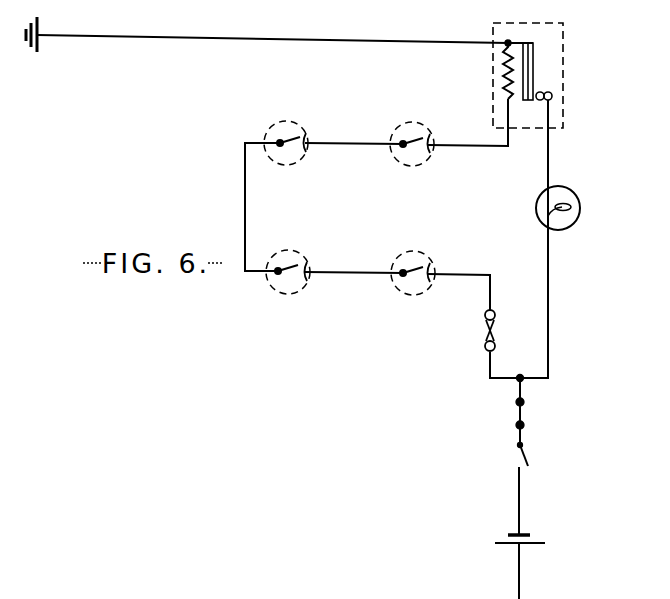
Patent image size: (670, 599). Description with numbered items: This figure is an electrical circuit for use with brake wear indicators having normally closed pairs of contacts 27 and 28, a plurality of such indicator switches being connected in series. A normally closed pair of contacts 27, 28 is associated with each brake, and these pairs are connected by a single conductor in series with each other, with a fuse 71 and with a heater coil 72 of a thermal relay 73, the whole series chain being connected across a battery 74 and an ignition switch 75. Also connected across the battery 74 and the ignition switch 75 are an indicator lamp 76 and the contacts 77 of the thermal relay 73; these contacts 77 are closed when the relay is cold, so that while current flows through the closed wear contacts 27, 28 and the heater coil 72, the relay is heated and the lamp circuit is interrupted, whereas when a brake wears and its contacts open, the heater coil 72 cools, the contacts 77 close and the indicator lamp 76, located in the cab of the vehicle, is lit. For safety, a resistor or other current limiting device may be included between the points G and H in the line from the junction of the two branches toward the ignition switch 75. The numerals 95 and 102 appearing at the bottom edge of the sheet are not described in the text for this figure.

The thermal relay 73 is at (566, 41).
The heater coil 72 is at (500, 62).
The contacts of the thermal relay 77 is at (551, 92).
The contact 27 is at (281, 134).
The contact 28 is at (308, 133).
The indicator lamp 76 is at (580, 201).
The fuse 71 is at (497, 344).
The point G is at (516, 402).
The point H is at (516, 425).
The ignition switch 75 is at (530, 457).
The battery 74 is at (542, 543).
The contact 95 is at (245, 598).
The element 102 is at (325, 598).